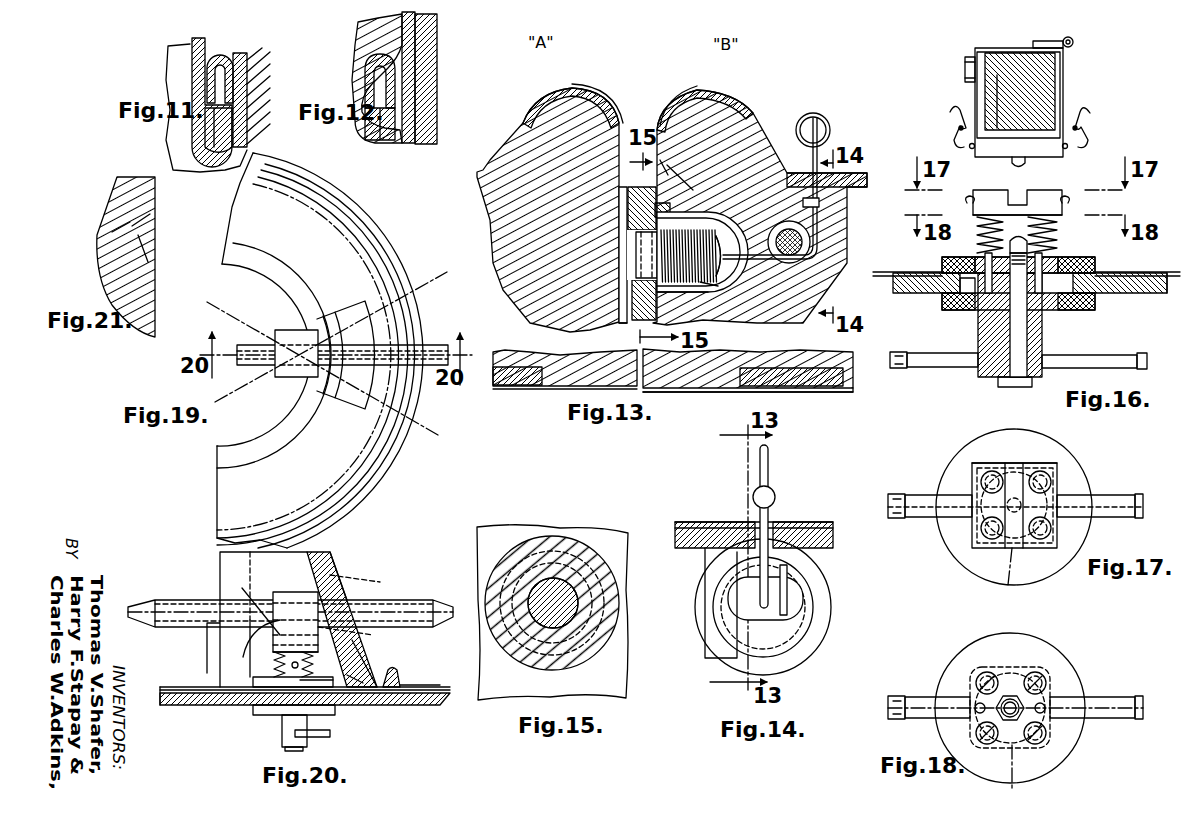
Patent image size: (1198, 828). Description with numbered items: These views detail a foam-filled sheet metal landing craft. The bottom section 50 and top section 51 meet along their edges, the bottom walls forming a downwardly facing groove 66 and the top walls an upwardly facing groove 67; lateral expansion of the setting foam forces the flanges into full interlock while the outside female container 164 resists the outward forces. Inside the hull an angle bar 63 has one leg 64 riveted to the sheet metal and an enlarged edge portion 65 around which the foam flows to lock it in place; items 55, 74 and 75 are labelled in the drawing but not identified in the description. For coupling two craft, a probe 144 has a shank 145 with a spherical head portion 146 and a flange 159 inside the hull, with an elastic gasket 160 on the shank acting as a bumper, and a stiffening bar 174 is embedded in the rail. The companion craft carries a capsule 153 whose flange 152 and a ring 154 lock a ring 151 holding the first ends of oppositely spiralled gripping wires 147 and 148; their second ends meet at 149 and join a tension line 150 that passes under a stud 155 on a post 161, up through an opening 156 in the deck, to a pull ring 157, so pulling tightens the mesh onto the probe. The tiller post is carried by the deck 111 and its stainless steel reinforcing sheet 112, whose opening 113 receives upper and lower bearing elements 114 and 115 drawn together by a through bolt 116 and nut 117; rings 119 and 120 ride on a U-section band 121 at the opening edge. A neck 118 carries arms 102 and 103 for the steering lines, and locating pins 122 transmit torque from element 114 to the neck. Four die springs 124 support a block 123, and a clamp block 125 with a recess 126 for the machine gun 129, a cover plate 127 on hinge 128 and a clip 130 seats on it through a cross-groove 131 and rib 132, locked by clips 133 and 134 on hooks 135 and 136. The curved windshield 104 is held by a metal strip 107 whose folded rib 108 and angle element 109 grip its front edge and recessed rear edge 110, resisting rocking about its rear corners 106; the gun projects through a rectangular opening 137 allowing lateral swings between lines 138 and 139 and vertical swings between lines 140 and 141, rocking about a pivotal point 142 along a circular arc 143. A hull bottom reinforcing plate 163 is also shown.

In FIG. 11, the bottom section 50 is at (250, 128).
In FIG. 12, the bottom section 50 is at (420, 107).
In FIG. 13, the bottom section 50 is at (820, 394).
In FIG. 11, the top section 51 is at (206, 43).
In FIG. 12, the top section 51 is at (417, 28).
In FIG. 20, the top section 51 is at (402, 708).
In FIG. 13, the top section 51 is at (798, 322).
In FIG. 14, the top section 51 is at (811, 520).
In FIG. 16, the top section 51 is at (892, 272).
In FIG. 12, the resilient lobe 55 is at (357, 37).
In FIG. 21, the resilient lobe 55 is at (97, 260).
In FIG. 13, the resilient lobe 55 is at (553, 137).
In FIG. 21, the angle bar 63 is at (150, 223).
In FIG. 21, the leg 64 is at (147, 253).
In FIG. 21, the enlarged edge portion 65 is at (120, 232).
In FIG. 11, the downwardly facing groove 66 is at (223, 80).
In FIG. 12, the downwardly facing groove 66 is at (393, 72).
In FIG. 11, the upwardly facing groove 67 is at (210, 125).
In FIG. 12, the upwardly facing groove 67 is at (373, 113).
In FIG. 13, the lobe 74 is at (683, 97).
In FIG. 13, the lobe skin 75 is at (592, 88).
In FIG. 20, the arm 102 is at (327, 732).
In FIG. 16, the arm 102 is at (1090, 362).
In FIG. 17, the arm 102 is at (1107, 503).
In FIG. 18, the arm 102 is at (1093, 703).
In FIG. 16, the arm 103 is at (938, 358).
In FIG. 17, the arm 103 is at (923, 502).
In FIG. 18, the arm 103 is at (928, 703).
In FIG. 19, the curved windshield 104 is at (313, 243).
In FIG. 20, the curved windshield 104 is at (330, 552).
In FIG. 19, the rear corners 106 is at (217, 480).
In FIG. 20, the rear corners 106 is at (220, 685).
In FIG. 19, the metal strip 107 is at (350, 493).
In FIG. 20, the metal strip 107 is at (420, 683).
In FIG. 19, the folded rib 108 is at (373, 447).
In FIG. 20, the folded rib 108 is at (392, 673).
In FIG. 19, the angle shaped curved element 109 is at (352, 453).
In FIG. 20, the angle shaped curved element 109 is at (360, 680).
In FIG. 20, the curved recessed rear edge 110 is at (362, 673).
In FIG. 20, the deck 111 is at (168, 687).
In FIG. 16, the deck 111 is at (1160, 280).
In FIG. 20, the reinforcing sheet 112 is at (200, 695).
In FIG. 14, the reinforcing sheet 112 is at (682, 538).
In FIG. 16, the reinforcing sheet 112 is at (1138, 290).
In FIG. 16, the opening 113 is at (1042, 293).
In FIG. 18, the opening 113 is at (1010, 708).
In FIG. 20, the upper bearing element 114 is at (263, 682).
In FIG. 16, the upper bearing element 114 is at (1073, 260).
In FIG. 17, the upper bearing element 114 is at (1068, 482).
In FIG. 18, the upper bearing element 114 is at (1068, 680).
In FIG. 20, the lower bearing element 115 is at (267, 708).
In FIG. 16, the lower bearing element 115 is at (958, 310).
In FIG. 16, the through bolt 116 is at (1017, 343).
In FIG. 16, the nut 117 is at (1017, 250).
In FIG. 18, the nut 117 is at (1010, 708).
In FIG. 20, the neck 118 is at (293, 722).
In FIG. 16, the neck 118 is at (998, 325).
In FIG. 17, the neck 118 is at (1015, 576).
In FIG. 18, the neck 118 is at (1015, 777).
In FIG. 16, the ring 119 is at (942, 267).
In FIG. 16, the ring 120 is at (942, 295).
In FIG. 16, the U-section band 121 is at (1095, 268).
In FIG. 16, the locating pins 122 is at (987, 260).
In FIG. 20, the block 123 is at (310, 650).
In FIG. 16, the block 123 is at (1062, 190).
In FIG. 17, the block 123 is at (1042, 463).
In FIG. 20, the die springs 124 is at (277, 663).
In FIG. 16, the die springs 124 is at (977, 232).
In FIG. 17, the die springs 124 is at (973, 472).
In FIG. 18, the die springs 124 is at (975, 678).
In FIG. 20, the clamp block 125 is at (292, 595).
In FIG. 16, the clamp block 125 is at (1060, 100).
In FIG. 16, the recess 126 is at (1055, 87).
In FIG. 19, the cover plate 127 is at (297, 333).
In FIG. 16, the cover plate 127 is at (975, 48).
In FIG. 16, the hinge 128 is at (1073, 40).
In FIG. 19, the machine gun 129 is at (430, 347).
In FIG. 20, the machine gun 129 is at (407, 600).
In FIG. 16, the machine gun 129 is at (997, 72).
In FIG. 16, the clip 130 is at (970, 82).
In FIG. 16, the cross-groove 131 is at (1013, 195).
In FIG. 17, the cross-groove 131 is at (1013, 488).
In FIG. 16, the rib 132 is at (1013, 163).
In FIG. 16, the clip 133 is at (957, 130).
In FIG. 16, the clip 134 is at (1087, 128).
In FIG. 16, the hook 135 is at (967, 202).
In FIG. 16, the hook 136 is at (1068, 202).
In FIG. 19, the rectangular opening 137 is at (358, 307).
In FIG. 20, the rectangular opening 137 is at (340, 575).
In FIG. 19, the line 138 is at (430, 278).
In FIG. 19, the line 139 is at (428, 427).
In FIG. 20, the line 140 is at (373, 582).
In FIG. 20, the line 141 is at (373, 635).
In FIG. 20, the pivotal point 142 is at (307, 683).
In FIG. 20, the circular arc 143 is at (257, 635).
In FIG. 13, the probe 144 is at (717, 287).
In FIG. 13, the shank 145 is at (637, 263).
In FIG. 15, the shank 145 is at (542, 563).
In FIG. 13, the spherical head portion 146 is at (703, 288).
In FIG. 13, the gripping wire 147 is at (717, 285).
In FIG. 13, the gripping wire 148 is at (733, 289).
In FIG. 13, the second wire ends 149 is at (732, 224).
In FIG. 13, the tension line 150 is at (813, 161).
In FIG. 14, the tension line 150 is at (768, 595).
In FIG. 13, the ring 151 is at (639, 255).
In FIG. 14, the ring 151 is at (767, 470).
In FIG. 13, the flange 152 is at (667, 203).
In FIG. 13, the capsule 153 is at (693, 190).
In FIG. 14, the capsule 153 is at (773, 625).
In FIG. 13, the ring 154 is at (658, 170).
In FIG. 14, the ring 154 is at (823, 620).
In FIG. 13, the stud 155 is at (833, 231).
In FIG. 14, the stud 155 is at (763, 597).
In FIG. 13, the opening 156 is at (805, 202).
In FIG. 14, the opening 156 is at (775, 500).
In FIG. 13, the ring 157 is at (820, 113).
In FIG. 13, the flange 159 is at (617, 330).
In FIG. 13, the gasket 160 is at (630, 210).
In FIG. 15, the gasket 160 is at (567, 548).
In FIG. 14, the post 161 is at (705, 648).
In FIG. 13, the reinforcing plate 163 is at (505, 378).
In FIG. 11, the female container 164 is at (253, 97).
In FIG. 13, the stiffening bar 174 is at (553, 97).